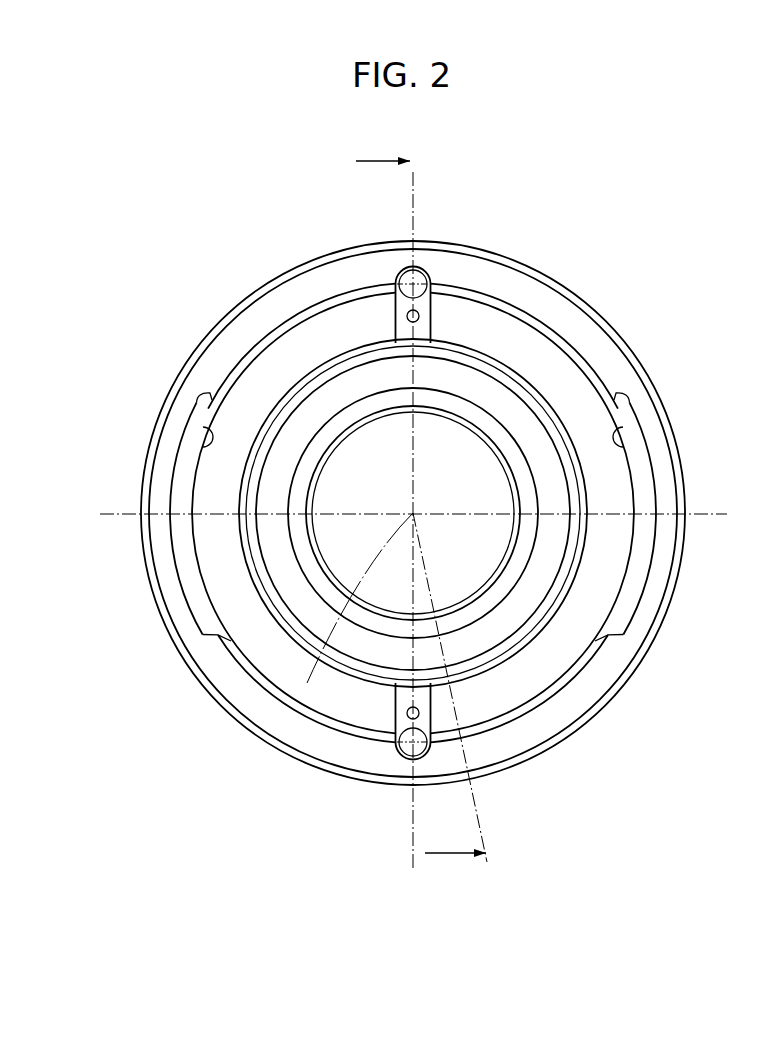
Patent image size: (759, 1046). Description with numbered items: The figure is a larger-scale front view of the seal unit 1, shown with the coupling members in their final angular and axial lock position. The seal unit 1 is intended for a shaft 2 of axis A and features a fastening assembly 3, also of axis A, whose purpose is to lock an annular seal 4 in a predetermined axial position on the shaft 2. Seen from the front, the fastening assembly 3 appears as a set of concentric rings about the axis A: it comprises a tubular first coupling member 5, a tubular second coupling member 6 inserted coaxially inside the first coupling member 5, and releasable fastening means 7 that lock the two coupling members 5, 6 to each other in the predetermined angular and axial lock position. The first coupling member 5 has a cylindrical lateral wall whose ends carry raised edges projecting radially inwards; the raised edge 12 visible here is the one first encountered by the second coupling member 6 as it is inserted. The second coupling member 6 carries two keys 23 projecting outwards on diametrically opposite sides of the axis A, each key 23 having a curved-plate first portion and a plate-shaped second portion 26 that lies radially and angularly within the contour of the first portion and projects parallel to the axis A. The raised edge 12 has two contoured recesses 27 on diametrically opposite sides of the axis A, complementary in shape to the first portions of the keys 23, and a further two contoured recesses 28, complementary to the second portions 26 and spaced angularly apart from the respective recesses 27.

The seal unit 1 is at (602, 250).
The shaft 2 is at (456, 548).
The fastening assembly 3 is at (202, 336).
The annular seal 4 is at (484, 634).
The first coupling member 5 is at (250, 293).
The second coupling member 6 is at (287, 658).
The releasable fastening means 7 is at (456, 274).
The raised edge 12 is at (290, 292).
The key 23 is at (389, 316).
The second portion 26 is at (437, 311).
The contoured recess 27 is at (185, 449).
The further contoured recess 28 is at (409, 283).
The axis A is at (300, 692).